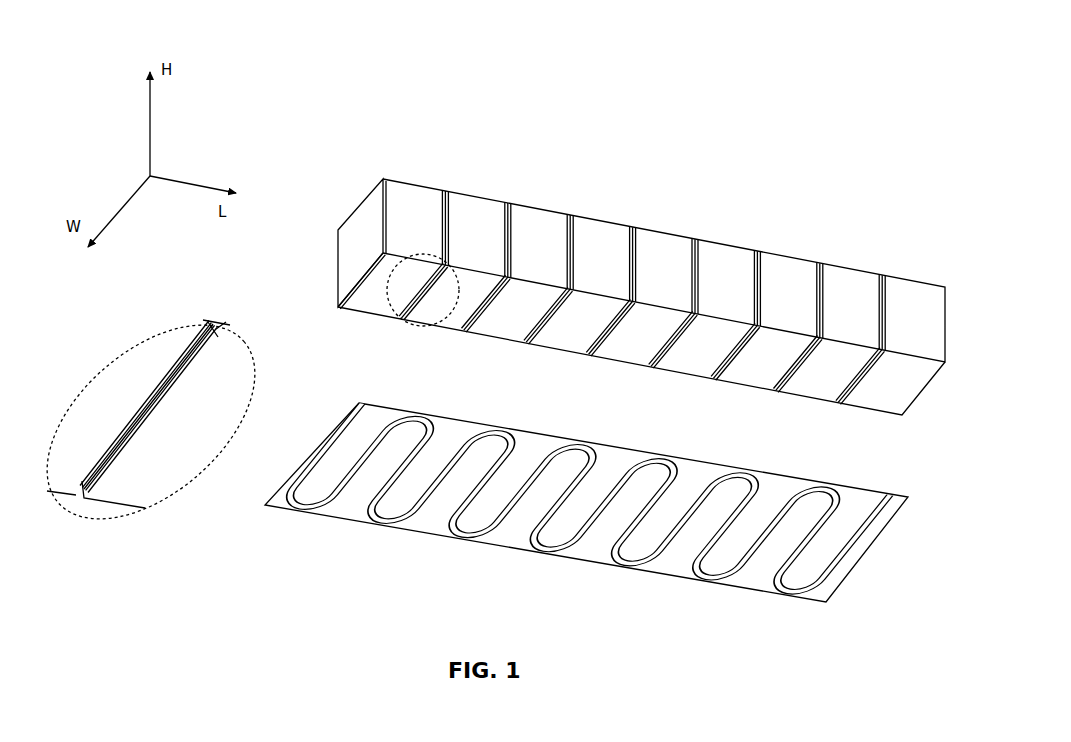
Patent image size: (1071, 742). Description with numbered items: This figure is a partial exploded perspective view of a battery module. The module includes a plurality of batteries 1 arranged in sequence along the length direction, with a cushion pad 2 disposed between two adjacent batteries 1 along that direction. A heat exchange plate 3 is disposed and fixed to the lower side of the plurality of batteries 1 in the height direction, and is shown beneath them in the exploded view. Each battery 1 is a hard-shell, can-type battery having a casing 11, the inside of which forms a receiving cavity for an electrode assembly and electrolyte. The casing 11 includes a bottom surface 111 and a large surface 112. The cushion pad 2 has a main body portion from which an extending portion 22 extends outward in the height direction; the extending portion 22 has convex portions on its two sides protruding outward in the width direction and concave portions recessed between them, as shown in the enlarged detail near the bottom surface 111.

The battery 1 is at (478, 345).
The cushion pad 2 is at (506, 200).
The heat exchange plate 3 is at (518, 535).
The casing 11 is at (496, 343).
The extending portion 22 is at (500, 282).
The bottom surface 111 is at (368, 300).
The large surface 112 is at (346, 253).